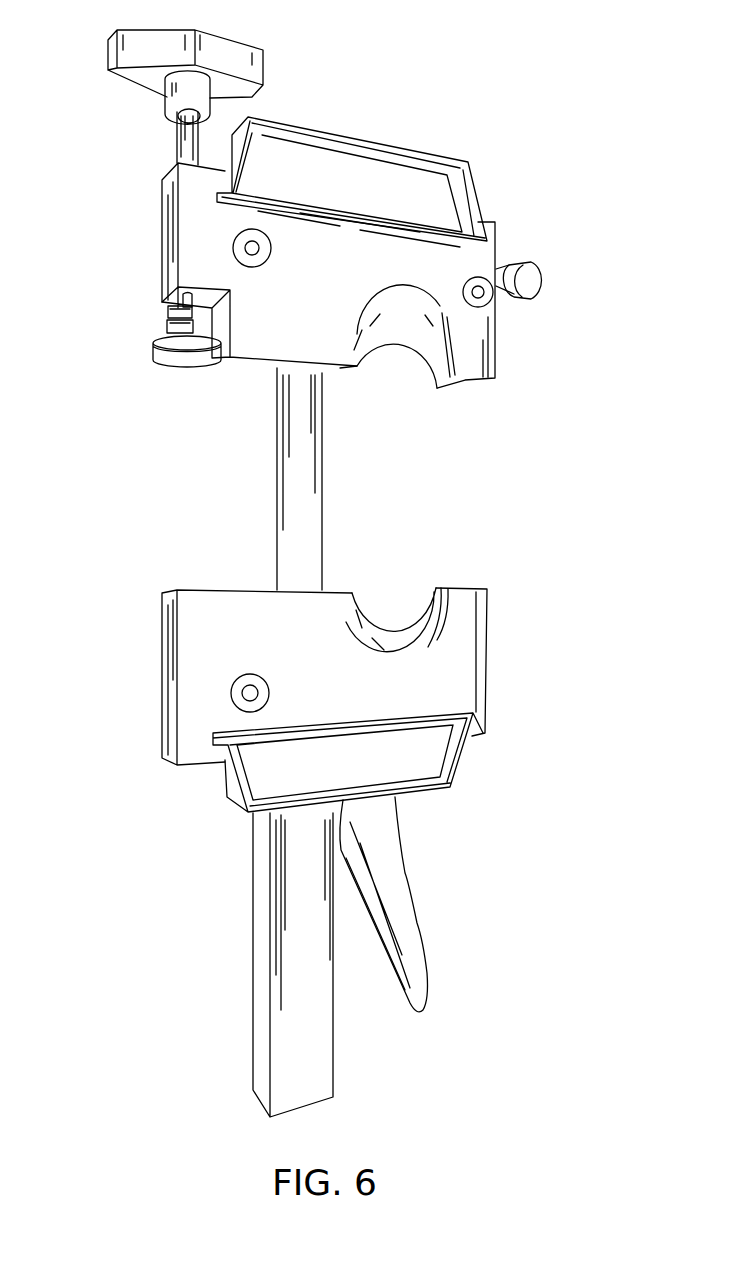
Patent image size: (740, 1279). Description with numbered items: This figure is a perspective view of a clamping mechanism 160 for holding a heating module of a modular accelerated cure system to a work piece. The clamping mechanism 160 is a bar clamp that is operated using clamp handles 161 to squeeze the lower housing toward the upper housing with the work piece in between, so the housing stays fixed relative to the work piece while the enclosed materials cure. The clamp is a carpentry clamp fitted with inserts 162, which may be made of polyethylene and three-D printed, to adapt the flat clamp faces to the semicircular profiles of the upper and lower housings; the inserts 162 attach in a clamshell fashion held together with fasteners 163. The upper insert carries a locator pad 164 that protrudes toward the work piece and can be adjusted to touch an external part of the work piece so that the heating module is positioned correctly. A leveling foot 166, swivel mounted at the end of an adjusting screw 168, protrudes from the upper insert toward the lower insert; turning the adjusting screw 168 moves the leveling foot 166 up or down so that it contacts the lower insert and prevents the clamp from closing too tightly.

The clamping mechanism 160 is at (347, 573).
The clamp handle 161 is at (412, 888).
The insert 162 is at (495, 352).
The fastener 163 is at (231, 694).
The locator pad 164 is at (540, 283).
The leveling foot 166 is at (153, 347).
The adjusting screw 168 is at (177, 141).